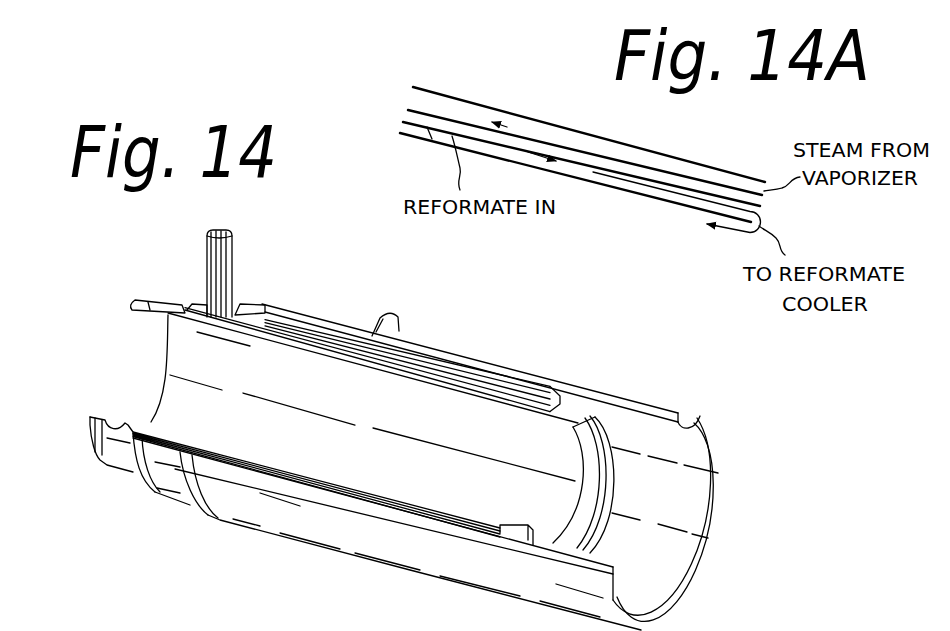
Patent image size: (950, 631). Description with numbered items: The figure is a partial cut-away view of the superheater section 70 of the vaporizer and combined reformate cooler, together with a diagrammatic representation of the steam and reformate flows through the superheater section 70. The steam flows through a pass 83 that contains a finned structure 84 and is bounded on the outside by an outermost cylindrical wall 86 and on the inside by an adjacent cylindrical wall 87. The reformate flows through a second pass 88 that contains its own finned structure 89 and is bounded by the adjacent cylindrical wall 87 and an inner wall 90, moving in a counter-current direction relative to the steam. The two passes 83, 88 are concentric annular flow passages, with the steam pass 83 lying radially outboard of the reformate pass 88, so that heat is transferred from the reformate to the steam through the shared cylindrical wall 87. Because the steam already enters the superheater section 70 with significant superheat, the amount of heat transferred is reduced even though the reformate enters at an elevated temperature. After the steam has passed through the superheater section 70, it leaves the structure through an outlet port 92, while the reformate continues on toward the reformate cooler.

In FIG. 14, the superheater section 70 is at (509, 330).
In FIG. 14, the pass 83 is at (568, 384).
In FIG. 14A, the pass 83 is at (704, 173).
In FIG. 14, the finned structure 84 is at (512, 376).
In FIG. 14, the outermost cylindrical wall 86 is at (700, 413).
In FIG. 14A, the outermost cylindrical wall 86 is at (550, 122).
In FIG. 14, the adjacent cylindrical wall 87 is at (640, 397).
In FIG. 14A, the adjacent cylindrical wall 87 is at (408, 110).
In FIG. 14, the pass 88 is at (320, 345).
In FIG. 14A, the pass 88 is at (423, 135).
In FIG. 14, the finned structure 89 is at (344, 346).
In FIG. 14, the inner wall 90 is at (238, 326).
In FIG. 14A, the inner wall 90 is at (630, 193).
In FIG. 14, the outlet port 92 is at (399, 322).